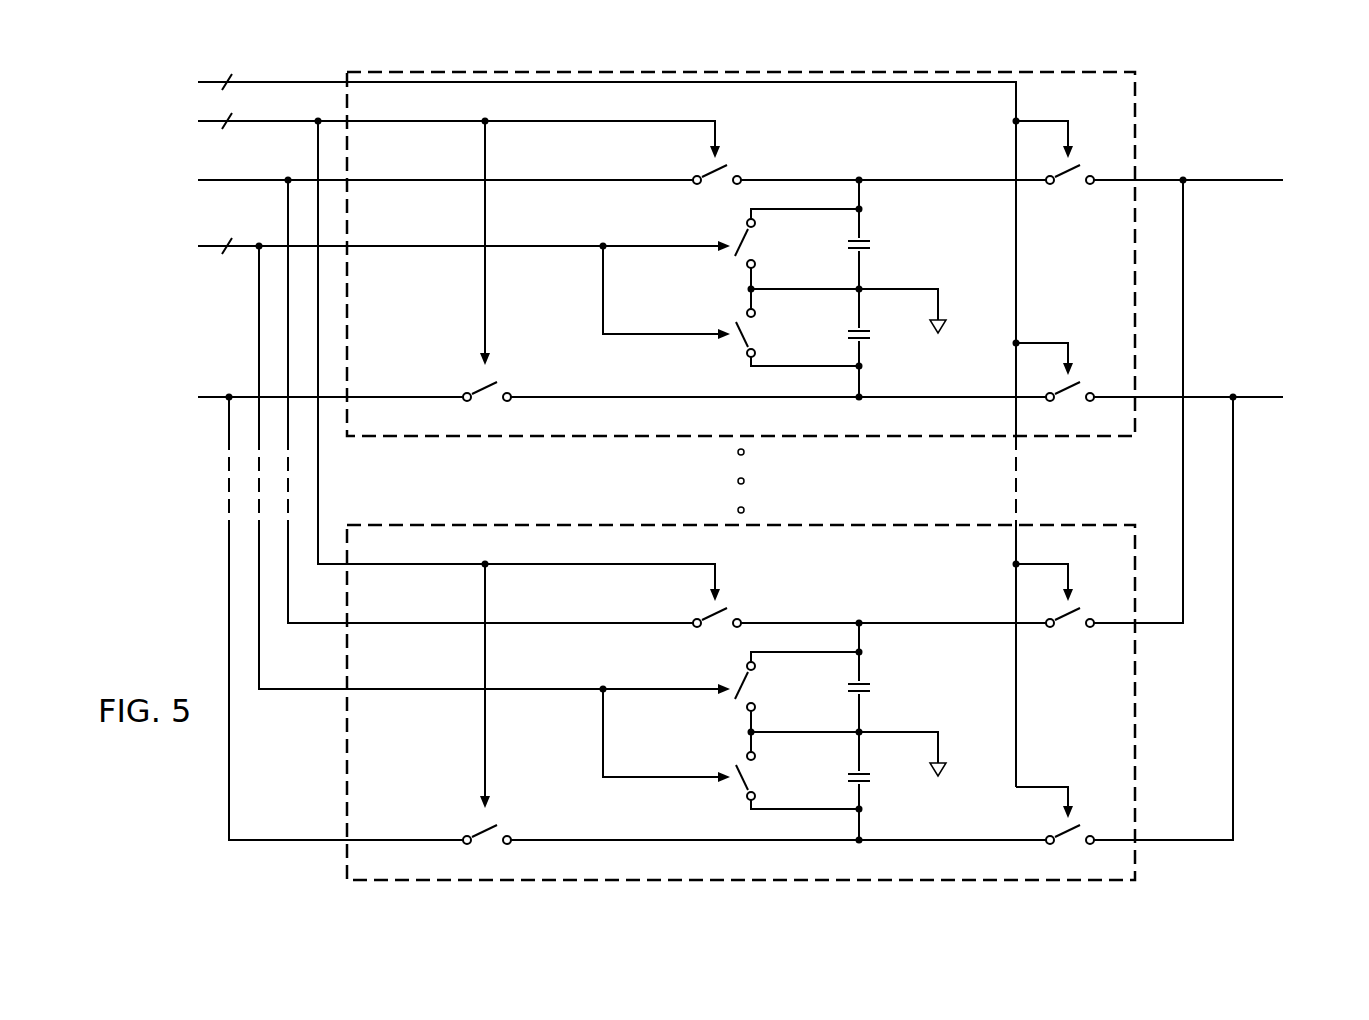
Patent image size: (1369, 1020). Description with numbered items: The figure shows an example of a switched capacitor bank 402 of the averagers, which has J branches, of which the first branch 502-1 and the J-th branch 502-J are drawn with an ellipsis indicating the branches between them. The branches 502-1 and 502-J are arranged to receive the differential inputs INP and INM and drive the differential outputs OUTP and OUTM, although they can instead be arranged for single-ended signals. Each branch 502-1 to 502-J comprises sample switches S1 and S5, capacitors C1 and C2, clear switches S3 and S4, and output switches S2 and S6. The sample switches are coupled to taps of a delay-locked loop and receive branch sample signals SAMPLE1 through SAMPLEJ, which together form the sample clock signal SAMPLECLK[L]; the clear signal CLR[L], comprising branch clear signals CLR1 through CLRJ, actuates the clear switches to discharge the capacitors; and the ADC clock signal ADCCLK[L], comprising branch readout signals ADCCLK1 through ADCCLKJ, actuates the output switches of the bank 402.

The switched capacitor bank 402 is at (166, 556).
The first branch 502-1 is at (563, 443).
The J-th branch 502-J is at (919, 517).